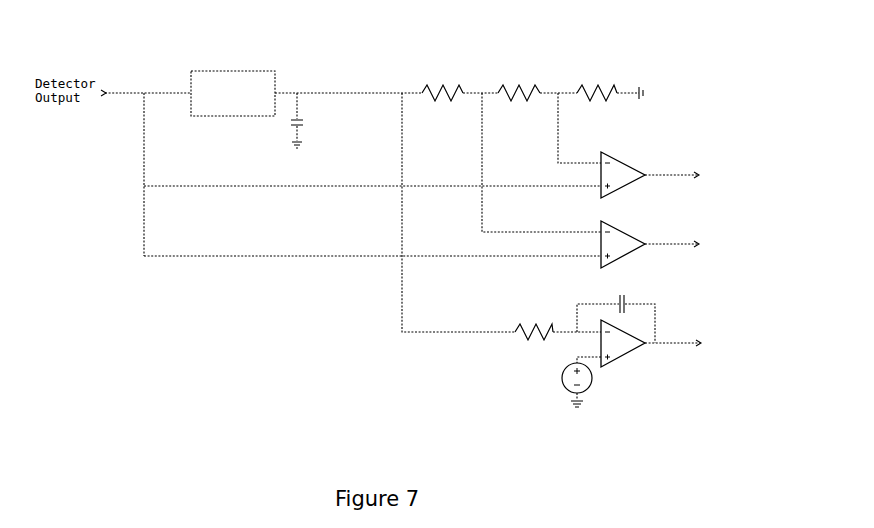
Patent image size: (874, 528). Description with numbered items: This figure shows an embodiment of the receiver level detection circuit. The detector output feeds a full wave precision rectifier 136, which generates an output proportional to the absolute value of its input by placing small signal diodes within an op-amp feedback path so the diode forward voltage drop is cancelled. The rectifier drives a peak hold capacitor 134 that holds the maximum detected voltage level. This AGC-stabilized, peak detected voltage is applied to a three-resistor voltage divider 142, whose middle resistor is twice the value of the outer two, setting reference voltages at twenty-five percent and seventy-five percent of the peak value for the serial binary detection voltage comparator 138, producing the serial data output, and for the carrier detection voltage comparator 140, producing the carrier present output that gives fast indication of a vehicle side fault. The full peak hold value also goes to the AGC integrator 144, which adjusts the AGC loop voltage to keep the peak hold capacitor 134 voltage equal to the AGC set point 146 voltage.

The peak hold capacitor 134 is at (299, 131).
The full wave precision rectifier 136 is at (242, 71).
The serial binary detection voltage comparator 138 is at (617, 229).
The carrier detection voltage comparator 140 is at (623, 161).
The R-2R-R resistor voltage divider 142 is at (646, 46).
The AGC integrator 144 is at (628, 350).
The AGC set point 146 is at (563, 391).